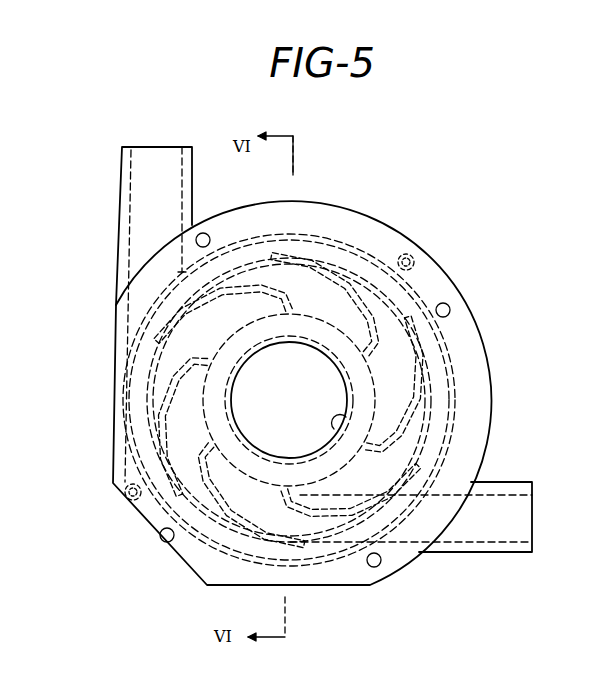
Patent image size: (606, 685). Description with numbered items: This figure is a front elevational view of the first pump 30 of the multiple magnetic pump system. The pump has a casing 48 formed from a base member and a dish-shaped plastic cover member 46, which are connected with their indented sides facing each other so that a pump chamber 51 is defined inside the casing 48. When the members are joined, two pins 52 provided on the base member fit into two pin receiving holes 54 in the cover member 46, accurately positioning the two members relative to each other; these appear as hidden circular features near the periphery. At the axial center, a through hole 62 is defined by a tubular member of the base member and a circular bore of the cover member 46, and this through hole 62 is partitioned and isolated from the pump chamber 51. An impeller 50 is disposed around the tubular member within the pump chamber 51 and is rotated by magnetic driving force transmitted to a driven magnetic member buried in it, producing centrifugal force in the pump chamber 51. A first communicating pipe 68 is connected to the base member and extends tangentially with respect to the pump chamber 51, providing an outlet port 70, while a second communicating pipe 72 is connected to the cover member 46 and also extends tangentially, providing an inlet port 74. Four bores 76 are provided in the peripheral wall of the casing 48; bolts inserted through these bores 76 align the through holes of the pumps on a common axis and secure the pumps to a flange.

The first pump 30 is at (438, 178).
The cover member 46 is at (338, 220).
The casing 48 is at (317, 194).
The impeller 50 is at (368, 282).
The pump chamber 51 is at (456, 352).
The pins 52 is at (421, 256).
The pin receiving holes 54 is at (411, 254).
The through hole 62 is at (343, 417).
The first communicating pipe 68 is at (136, 178).
The outlet port 70 is at (95, 258).
The second communicating pipe 72 is at (495, 532).
The inlet port 74 is at (457, 557).
The bores 76 is at (207, 236).